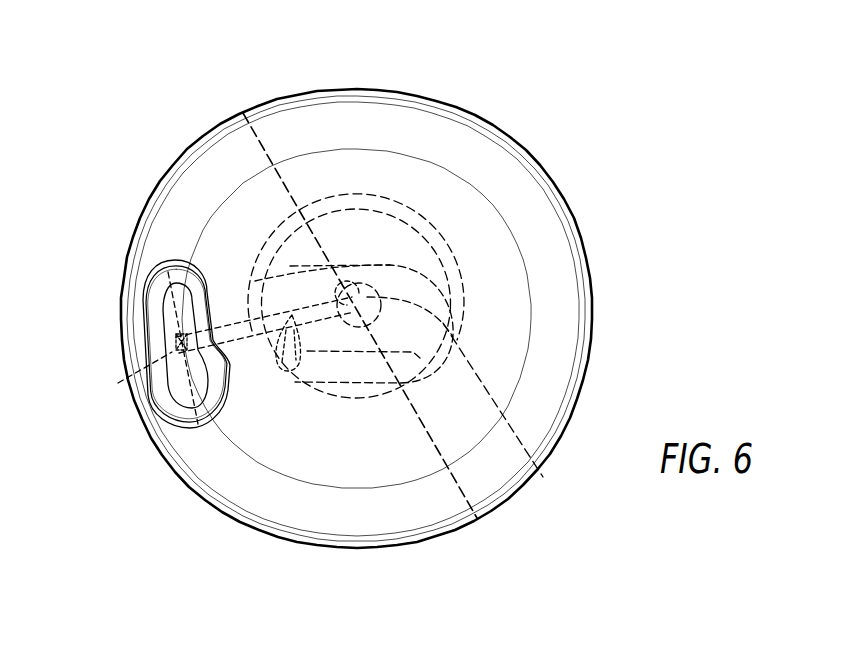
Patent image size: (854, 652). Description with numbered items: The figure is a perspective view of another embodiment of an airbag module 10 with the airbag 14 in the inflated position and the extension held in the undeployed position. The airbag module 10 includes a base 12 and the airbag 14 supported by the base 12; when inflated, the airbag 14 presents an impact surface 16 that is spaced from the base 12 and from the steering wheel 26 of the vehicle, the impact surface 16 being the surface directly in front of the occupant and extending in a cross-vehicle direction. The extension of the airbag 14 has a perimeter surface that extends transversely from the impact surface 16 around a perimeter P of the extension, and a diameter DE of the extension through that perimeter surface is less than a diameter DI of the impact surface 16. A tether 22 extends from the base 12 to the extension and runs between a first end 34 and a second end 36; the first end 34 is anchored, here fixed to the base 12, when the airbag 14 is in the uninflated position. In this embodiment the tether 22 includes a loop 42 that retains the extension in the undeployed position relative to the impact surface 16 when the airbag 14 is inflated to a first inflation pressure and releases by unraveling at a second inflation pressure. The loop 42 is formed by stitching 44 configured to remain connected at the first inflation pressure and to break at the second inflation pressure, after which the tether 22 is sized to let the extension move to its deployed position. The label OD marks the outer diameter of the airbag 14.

The airbag module 10 is at (670, 81).
The base 12 is at (543, 477).
The airbag 14 is at (591, 311).
The impact surface 16 is at (537, 261).
The tether 22 is at (252, 331).
The steering wheel 26 is at (437, 222).
The first end 34 is at (340, 292).
The second end 36 is at (183, 345).
The loop 42 is at (272, 375).
The stitching 44 is at (325, 323).
The perimeter P is at (147, 324).
The diameter of the extension DE is at (180, 378).
The diameter of the impact surface DI is at (262, 142).
The outer diameter OD is at (583, 239).